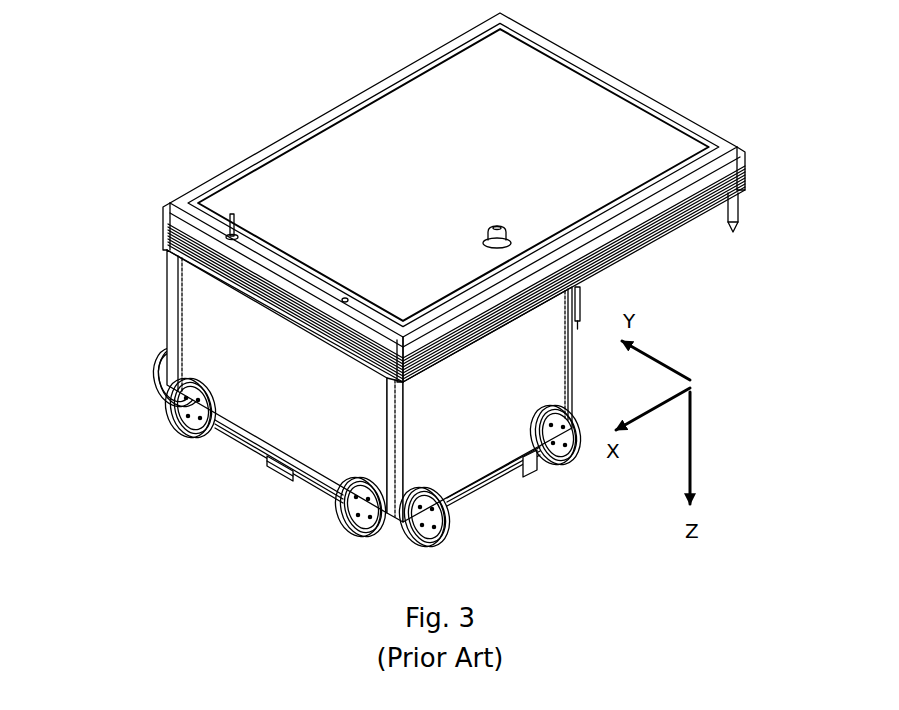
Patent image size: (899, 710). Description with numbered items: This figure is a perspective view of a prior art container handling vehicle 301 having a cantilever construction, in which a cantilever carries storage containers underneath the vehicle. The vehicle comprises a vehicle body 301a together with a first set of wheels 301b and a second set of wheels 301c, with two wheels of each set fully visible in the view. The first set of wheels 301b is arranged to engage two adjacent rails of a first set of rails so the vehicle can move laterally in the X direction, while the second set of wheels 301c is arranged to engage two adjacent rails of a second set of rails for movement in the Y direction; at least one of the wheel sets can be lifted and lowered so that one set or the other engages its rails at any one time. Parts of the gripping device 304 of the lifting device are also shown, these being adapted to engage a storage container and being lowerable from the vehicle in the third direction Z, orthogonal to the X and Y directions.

The container handling vehicle 301 is at (193, 106).
The vehicle body 301a is at (170, 227).
The first set of wheels 301b is at (527, 500).
The second set of wheels 301c is at (221, 477).
The gripping device 304 is at (752, 230).